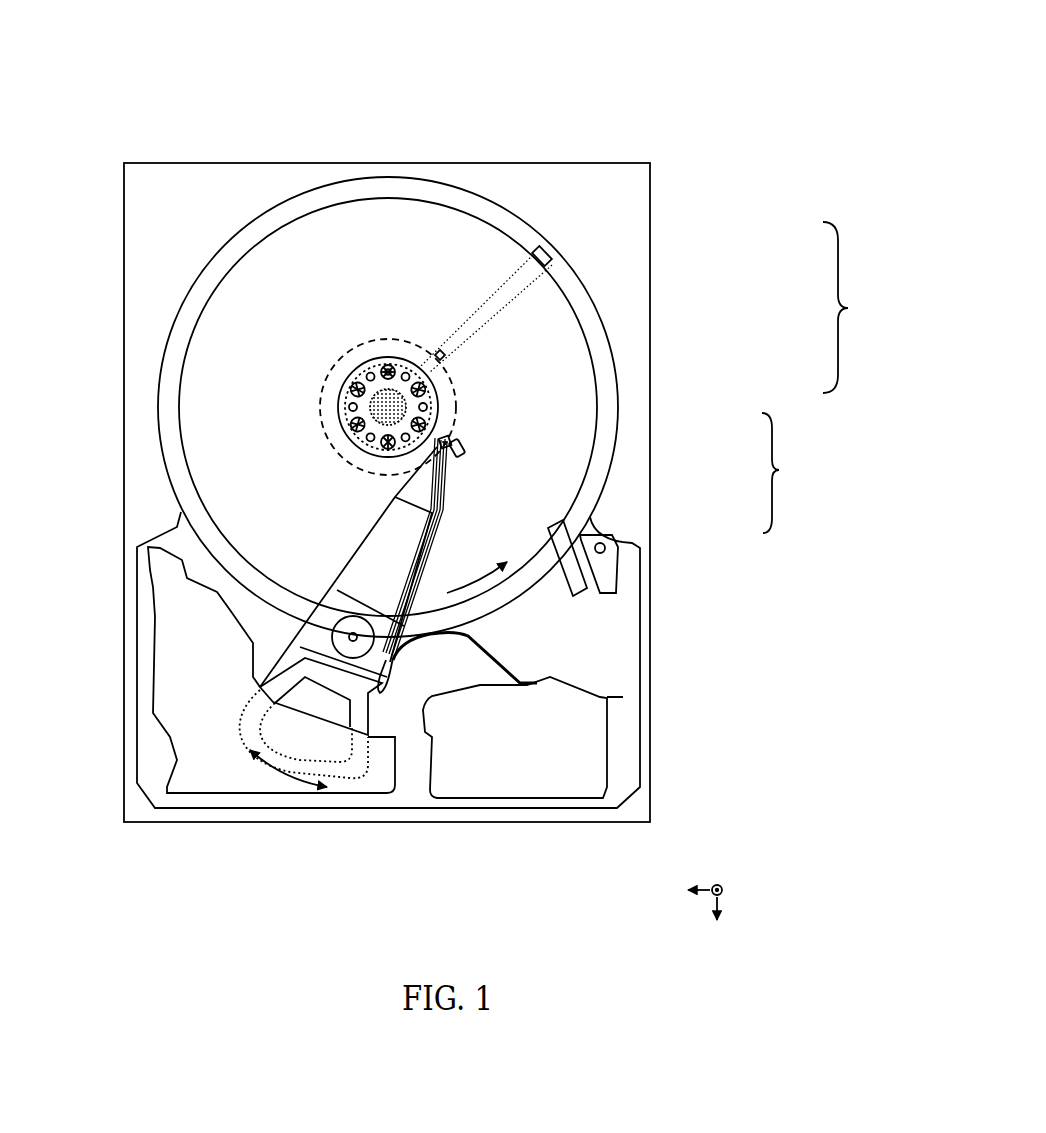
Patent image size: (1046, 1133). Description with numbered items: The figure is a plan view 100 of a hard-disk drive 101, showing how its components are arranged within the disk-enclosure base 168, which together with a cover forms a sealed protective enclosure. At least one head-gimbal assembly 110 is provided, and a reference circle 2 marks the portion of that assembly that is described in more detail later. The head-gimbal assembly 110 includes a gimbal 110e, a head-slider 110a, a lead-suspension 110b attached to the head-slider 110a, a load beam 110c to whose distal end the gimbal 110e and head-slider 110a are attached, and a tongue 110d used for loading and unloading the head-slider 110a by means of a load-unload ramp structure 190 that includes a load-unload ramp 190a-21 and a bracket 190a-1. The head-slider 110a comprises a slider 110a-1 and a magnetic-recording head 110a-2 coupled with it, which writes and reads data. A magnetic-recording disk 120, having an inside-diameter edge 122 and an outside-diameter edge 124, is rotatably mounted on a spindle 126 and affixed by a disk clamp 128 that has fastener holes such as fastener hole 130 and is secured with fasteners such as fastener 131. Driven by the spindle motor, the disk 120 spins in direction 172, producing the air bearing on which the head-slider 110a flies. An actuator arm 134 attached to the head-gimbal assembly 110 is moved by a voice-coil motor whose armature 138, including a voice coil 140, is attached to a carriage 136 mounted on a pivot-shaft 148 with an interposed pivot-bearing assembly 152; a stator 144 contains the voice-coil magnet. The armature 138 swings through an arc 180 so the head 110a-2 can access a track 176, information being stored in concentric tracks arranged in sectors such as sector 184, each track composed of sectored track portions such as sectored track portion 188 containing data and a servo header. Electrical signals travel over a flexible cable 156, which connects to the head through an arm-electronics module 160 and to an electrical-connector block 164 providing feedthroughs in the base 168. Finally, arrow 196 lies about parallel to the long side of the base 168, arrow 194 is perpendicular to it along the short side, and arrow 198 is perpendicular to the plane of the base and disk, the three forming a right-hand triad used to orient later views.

The plan view 100 is at (108, 86).
The hard-disk drive 101 is at (628, 148).
The reference circle 2 is at (450, 422).
The head-gimbal assembly 110 is at (676, 339).
The head-slider 110a is at (753, 278).
The slider 110a-1 is at (457, 436).
The magnetic-recording head 110a-2 is at (457, 433).
The lead-suspension 110b is at (457, 438).
The load beam 110c is at (457, 440).
The tongue 110d is at (457, 432).
The gimbal 110e is at (457, 434).
The magnetic-recording disk 120 is at (277, 490).
The inside-diameter edge 122 is at (340, 413).
The outside-diameter edge 124 is at (185, 445).
The spindle 126 is at (386, 405).
The disk clamp 128 is at (340, 382).
The fastener hole 130 is at (386, 368).
The fastener 131 is at (390, 366).
The actuator arm 134 is at (398, 542).
The carriage 136 is at (352, 608).
The armature 138 is at (370, 702).
The voice coil 140 is at (358, 723).
The stator 144 is at (178, 715).
The pivot-shaft 148 is at (349, 637).
The pivot-bearing assembly 152 is at (375, 636).
The flexible cable 156 is at (480, 638).
The arm-electronics module 160 is at (395, 662).
The electrical-connector block 164 is at (585, 737).
The disk-enclosure base 168 is at (134, 808).
The direction of disk spin 172 is at (483, 573).
The track 176 is at (327, 440).
The arc 180 is at (290, 780).
The sector 184 is at (545, 255).
The sectored track portion 188 is at (443, 348).
The load-unload ramp structure 190 is at (795, 473).
The bracket 190a-1 is at (602, 568).
The load-unload ramp 190a-21 is at (558, 532).
The arrow 194 is at (702, 886).
The arrow 196 is at (721, 903).
The arrow 198 is at (724, 889).